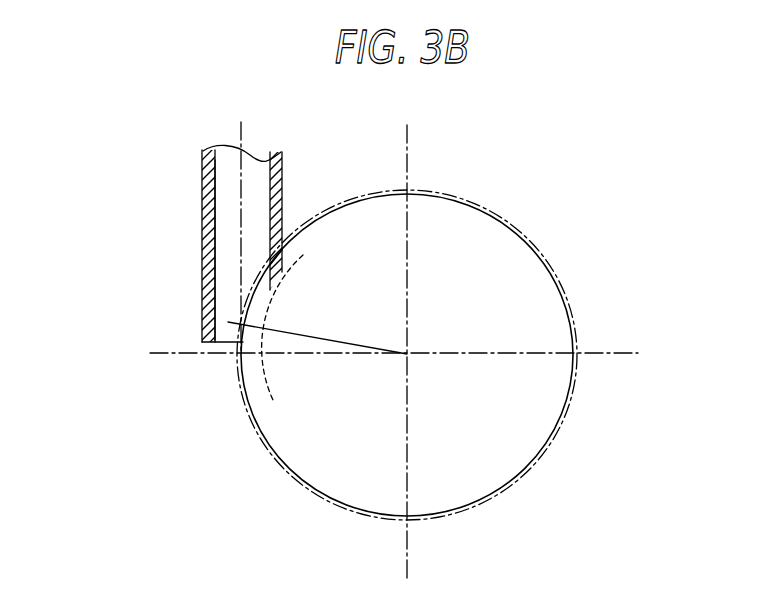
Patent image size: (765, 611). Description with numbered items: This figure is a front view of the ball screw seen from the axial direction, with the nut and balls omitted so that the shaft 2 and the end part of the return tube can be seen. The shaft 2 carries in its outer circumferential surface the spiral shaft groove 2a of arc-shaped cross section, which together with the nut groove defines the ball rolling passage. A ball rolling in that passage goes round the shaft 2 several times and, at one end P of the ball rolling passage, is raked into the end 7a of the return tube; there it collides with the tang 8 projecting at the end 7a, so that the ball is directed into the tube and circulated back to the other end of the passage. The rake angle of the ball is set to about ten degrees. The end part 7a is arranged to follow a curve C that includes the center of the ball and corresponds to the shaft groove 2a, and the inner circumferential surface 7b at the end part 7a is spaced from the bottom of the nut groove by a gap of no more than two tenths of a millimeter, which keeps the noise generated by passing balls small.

The shaft 2 is at (532, 277).
The shaft groove 2a is at (268, 398).
The end of the return tube 7a is at (277, 188).
The inner circumferential surface 7b is at (215, 313).
The tang 8 is at (277, 277).
The end of the ball rolling passage P is at (238, 326).
The curve C is at (286, 471).